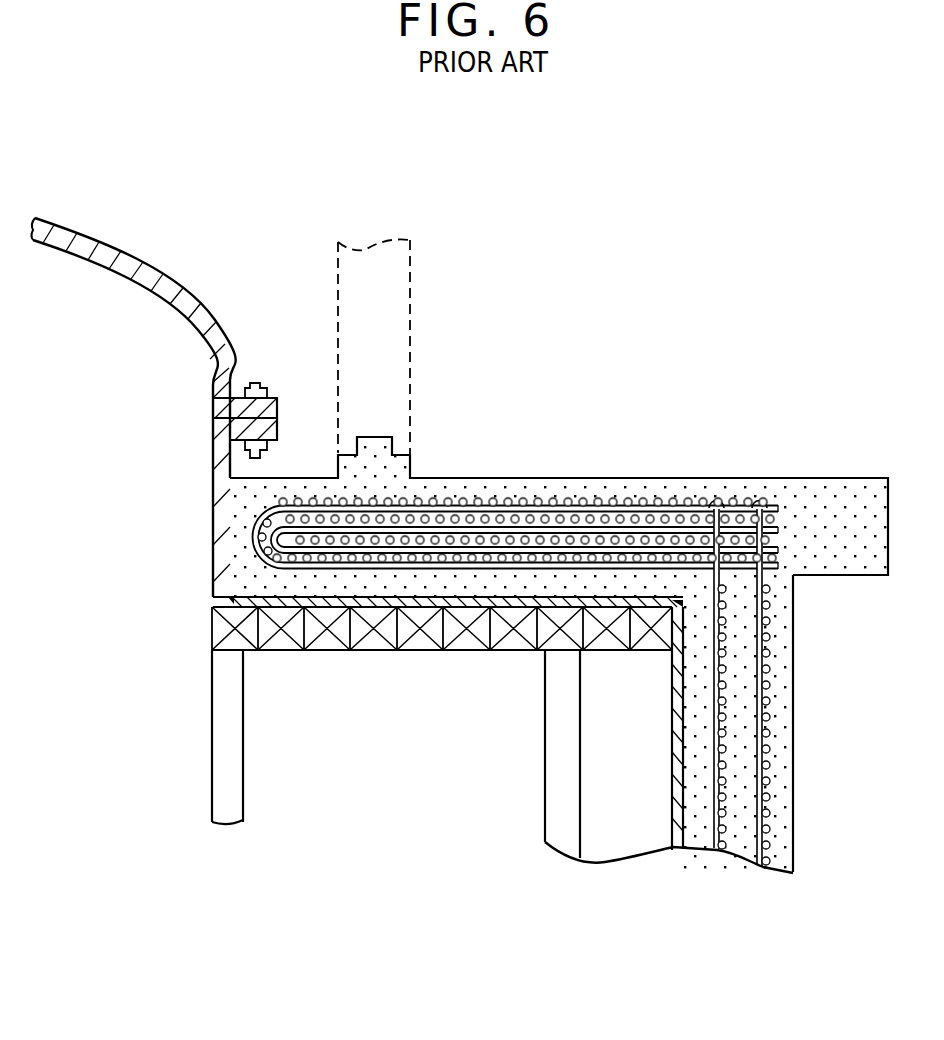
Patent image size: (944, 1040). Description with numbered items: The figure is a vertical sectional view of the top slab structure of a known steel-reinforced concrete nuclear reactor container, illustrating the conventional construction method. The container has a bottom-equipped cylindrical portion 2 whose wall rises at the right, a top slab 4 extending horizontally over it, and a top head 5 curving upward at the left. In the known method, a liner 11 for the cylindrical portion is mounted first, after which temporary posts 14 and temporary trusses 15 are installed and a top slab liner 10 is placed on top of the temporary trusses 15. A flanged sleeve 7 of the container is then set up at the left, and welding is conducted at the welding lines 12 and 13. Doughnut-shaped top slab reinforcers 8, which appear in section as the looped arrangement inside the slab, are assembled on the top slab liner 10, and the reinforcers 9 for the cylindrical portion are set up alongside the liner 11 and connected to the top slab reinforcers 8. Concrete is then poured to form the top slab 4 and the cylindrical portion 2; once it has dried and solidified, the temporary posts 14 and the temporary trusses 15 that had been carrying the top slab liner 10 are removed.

The bottom-equipped cylindrical portion 2 is at (783, 734).
The top slab 4 is at (594, 485).
The top head 5 is at (168, 290).
The flanged sleeve 7 is at (222, 462).
The top slab reinforcers 8 is at (497, 488).
The reinforcers for the cylindrical portion 9 is at (770, 695).
The top slab liner 10 is at (470, 608).
The liner for the cylindrical portion 11 is at (676, 720).
The welding line 12 is at (718, 616).
The welding line 13 is at (230, 600).
The temporary posts 14 is at (235, 713).
The temporary trusses 15 is at (403, 635).